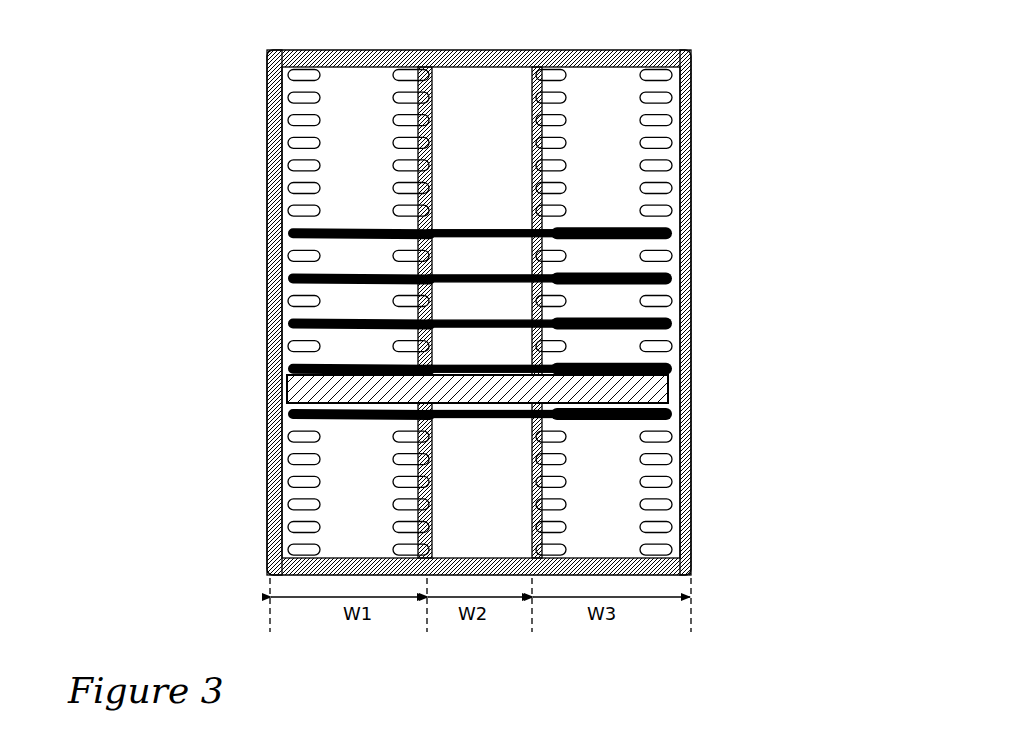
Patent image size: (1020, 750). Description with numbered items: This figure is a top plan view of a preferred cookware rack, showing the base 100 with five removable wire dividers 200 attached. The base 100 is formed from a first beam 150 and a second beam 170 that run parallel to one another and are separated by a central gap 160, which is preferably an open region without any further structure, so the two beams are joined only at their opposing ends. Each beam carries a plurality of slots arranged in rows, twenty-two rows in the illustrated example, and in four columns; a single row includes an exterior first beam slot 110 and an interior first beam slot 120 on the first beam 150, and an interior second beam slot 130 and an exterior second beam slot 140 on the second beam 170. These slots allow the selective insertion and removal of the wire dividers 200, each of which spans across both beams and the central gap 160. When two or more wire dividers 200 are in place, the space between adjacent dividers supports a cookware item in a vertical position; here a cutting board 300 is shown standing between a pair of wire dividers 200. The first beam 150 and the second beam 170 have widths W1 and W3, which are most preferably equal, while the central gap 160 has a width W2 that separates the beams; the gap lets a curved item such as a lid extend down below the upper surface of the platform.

The base 100 is at (706, 517).
The exterior first beam slot 110 is at (282, 167).
The interior first beam slot 120 is at (396, 165).
The interior second beam slot 130 is at (692, 84).
The exterior second beam slot 140 is at (691, 160).
The first beam 150 is at (369, 507).
The central gap 160 is at (488, 104).
The second beam 170 is at (616, 508).
The wire divider 200 is at (692, 201).
The cutting board 300 is at (288, 387).